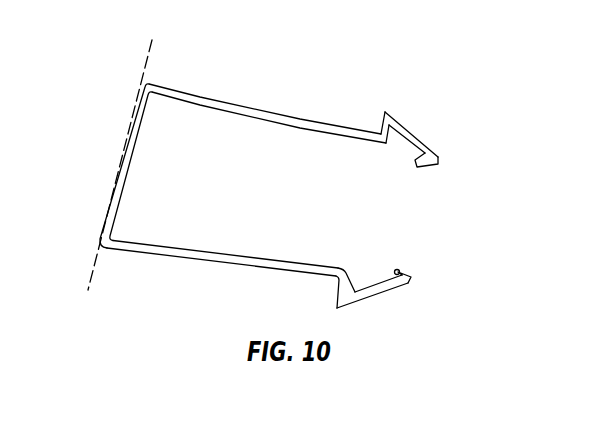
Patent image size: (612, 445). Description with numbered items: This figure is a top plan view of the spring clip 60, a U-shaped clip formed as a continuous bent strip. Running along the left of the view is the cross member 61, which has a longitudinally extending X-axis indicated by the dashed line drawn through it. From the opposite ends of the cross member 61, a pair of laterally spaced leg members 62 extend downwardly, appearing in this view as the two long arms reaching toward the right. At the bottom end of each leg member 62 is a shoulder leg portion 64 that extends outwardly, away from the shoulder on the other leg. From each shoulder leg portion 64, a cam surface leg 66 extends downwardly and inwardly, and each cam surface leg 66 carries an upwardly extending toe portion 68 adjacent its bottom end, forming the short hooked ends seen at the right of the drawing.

The U-shaped spring clip 60 is at (264, 186).
The cross member 61 is at (121, 162).
The leg member 62 is at (291, 127).
The shoulder leg portion 64 is at (382, 116).
The cam surface leg 66 is at (413, 131).
The toe portion 68 is at (427, 168).